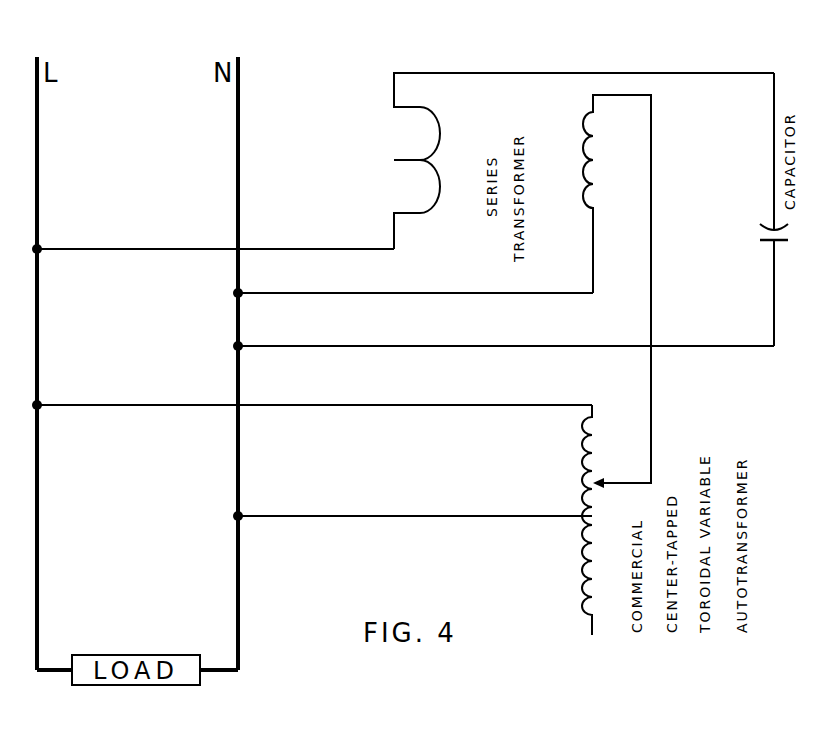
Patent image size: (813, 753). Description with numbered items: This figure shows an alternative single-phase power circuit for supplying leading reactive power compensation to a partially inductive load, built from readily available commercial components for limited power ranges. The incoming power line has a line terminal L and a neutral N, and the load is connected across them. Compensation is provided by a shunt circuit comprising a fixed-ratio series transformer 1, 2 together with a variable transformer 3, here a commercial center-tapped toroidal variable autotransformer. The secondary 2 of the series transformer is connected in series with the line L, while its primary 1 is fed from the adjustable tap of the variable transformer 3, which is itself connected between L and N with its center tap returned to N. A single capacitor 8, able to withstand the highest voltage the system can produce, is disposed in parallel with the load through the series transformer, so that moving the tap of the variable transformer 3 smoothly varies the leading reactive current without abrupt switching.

The primary of the fixed-ratio series transformer 1 is at (617, 289).
The secondary of the fixed-ratio series transformer 2 is at (584, 161).
The variable transformer 3 is at (569, 520).
The capacitor 8 is at (784, 209).